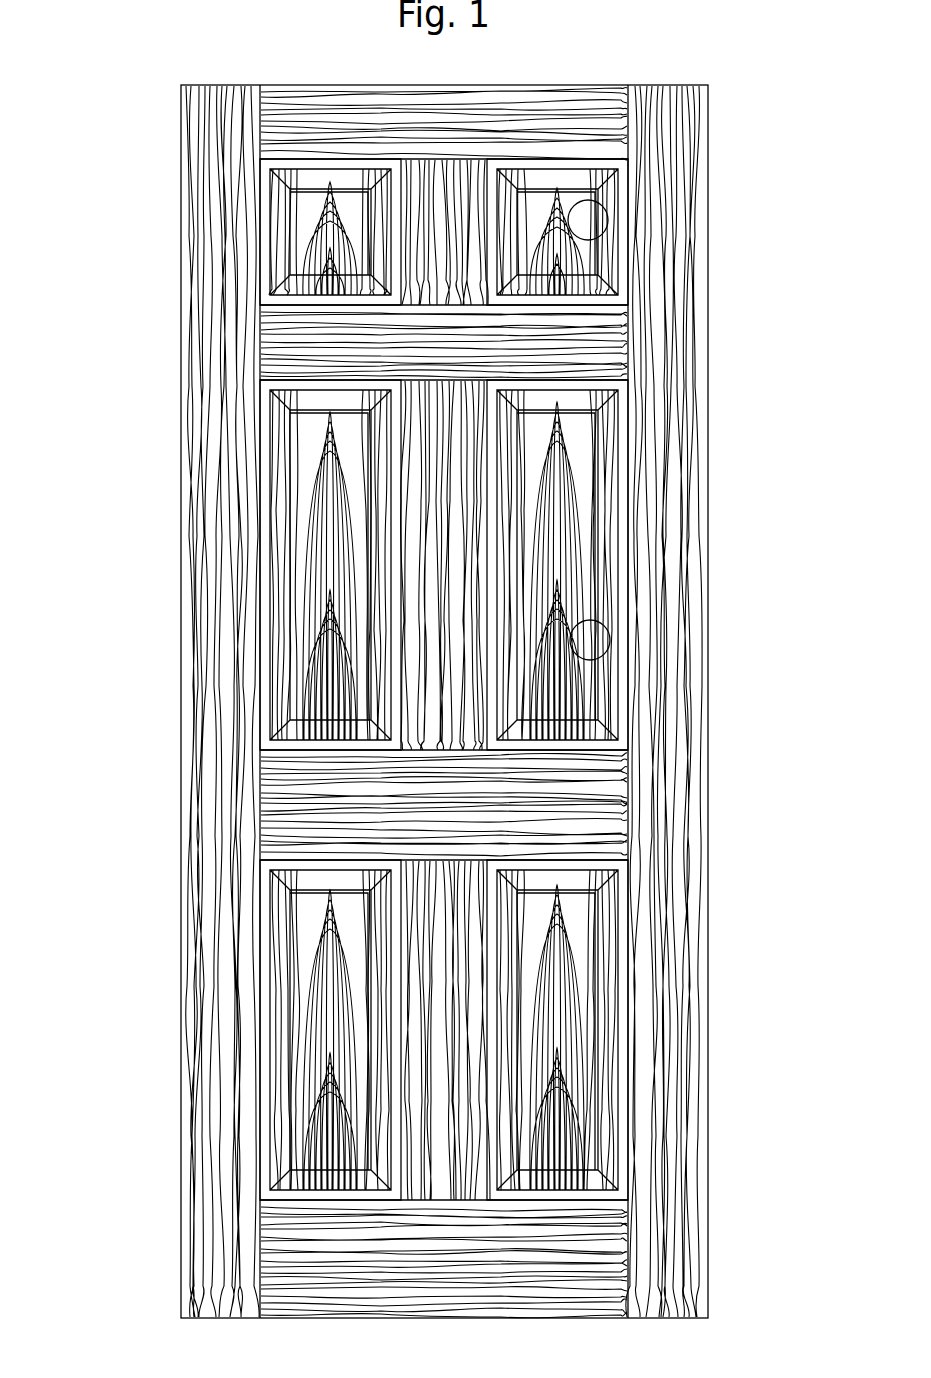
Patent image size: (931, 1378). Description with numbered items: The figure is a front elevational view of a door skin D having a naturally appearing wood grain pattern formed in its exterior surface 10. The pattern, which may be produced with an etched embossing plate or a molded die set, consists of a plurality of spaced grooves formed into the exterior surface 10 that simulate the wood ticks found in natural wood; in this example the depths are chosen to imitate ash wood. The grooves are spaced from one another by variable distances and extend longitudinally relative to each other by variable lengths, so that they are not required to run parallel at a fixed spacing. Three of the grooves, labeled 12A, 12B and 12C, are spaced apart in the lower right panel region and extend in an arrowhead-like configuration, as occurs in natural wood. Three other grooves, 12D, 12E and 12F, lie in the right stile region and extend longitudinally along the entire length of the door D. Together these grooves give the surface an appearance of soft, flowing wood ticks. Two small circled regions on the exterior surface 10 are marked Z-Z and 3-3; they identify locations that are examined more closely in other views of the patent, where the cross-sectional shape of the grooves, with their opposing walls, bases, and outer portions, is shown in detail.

The exterior surface 10 is at (150, 623).
The section Z-Z location Z-Z is at (606, 226).
The section 3-3 location 3-3 is at (608, 648).
The door skin D is at (826, 746).
The groove 12A is at (580, 1022).
The groove 12B is at (587, 1057).
The groove 12C is at (587, 1090).
The groove 12D is at (682, 858).
The groove 12E is at (692, 900).
The groove 12F is at (702, 943).